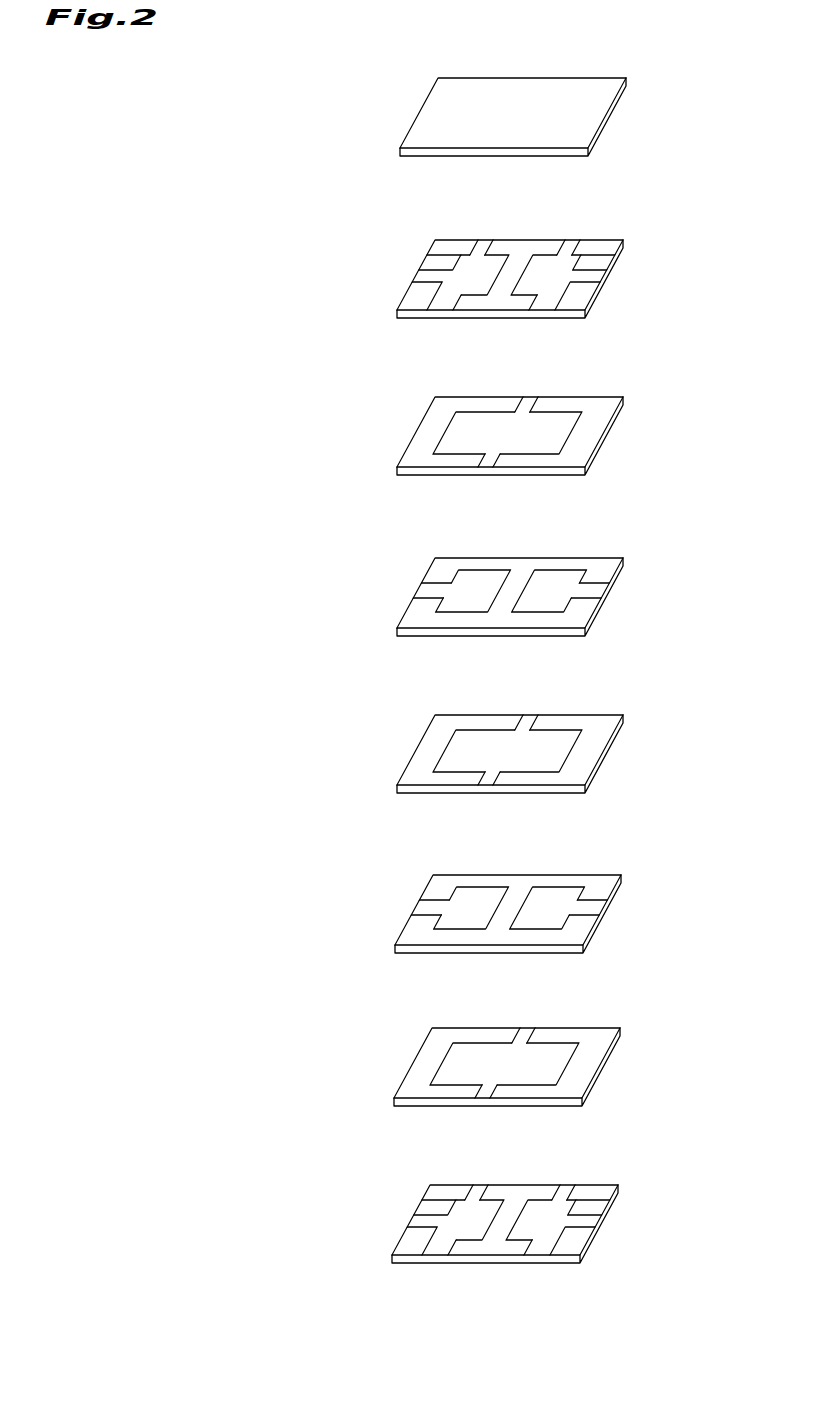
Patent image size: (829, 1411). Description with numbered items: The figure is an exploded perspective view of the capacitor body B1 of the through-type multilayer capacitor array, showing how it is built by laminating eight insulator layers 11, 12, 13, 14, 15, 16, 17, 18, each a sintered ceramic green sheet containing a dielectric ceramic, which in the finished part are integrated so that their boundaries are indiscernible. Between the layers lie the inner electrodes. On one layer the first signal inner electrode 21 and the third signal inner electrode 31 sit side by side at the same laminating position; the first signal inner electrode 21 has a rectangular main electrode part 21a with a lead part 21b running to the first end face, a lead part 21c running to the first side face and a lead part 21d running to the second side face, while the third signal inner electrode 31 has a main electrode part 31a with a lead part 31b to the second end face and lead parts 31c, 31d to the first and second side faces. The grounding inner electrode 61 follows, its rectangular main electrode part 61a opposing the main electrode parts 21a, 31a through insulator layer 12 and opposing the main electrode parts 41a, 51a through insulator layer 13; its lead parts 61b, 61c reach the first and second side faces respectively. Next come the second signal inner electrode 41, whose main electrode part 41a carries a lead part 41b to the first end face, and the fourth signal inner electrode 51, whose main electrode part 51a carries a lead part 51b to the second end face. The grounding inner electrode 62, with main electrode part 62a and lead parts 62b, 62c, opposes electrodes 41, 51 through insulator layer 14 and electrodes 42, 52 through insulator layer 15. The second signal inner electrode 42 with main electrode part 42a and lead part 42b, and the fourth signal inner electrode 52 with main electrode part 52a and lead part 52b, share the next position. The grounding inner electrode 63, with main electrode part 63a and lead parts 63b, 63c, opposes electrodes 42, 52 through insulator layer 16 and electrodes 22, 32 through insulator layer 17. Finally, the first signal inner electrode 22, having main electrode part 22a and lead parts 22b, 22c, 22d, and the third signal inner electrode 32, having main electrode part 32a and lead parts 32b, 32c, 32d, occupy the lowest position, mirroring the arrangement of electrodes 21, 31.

The capacitor body B1 is at (273, 1320).
The insulator layer 11 is at (614, 78).
The insulator layer 12 is at (547, 240).
The insulator layer 13 is at (612, 397).
The insulator layer 14 is at (612, 558).
The insulator layer 15 is at (612, 715).
The insulator layer 16 is at (610, 875).
The insulator layer 17 is at (610, 1028).
The insulator layer 18 is at (540, 1185).
The first signal inner electrode 21 is at (350, 200).
The main electrode part 21a is at (465, 268).
The lead part 21b is at (436, 270).
The lead part 21c is at (444, 297).
The lead part 21d is at (480, 244).
The third signal inner electrode 31 is at (688, 200).
The main electrode part 31a is at (555, 265).
The lead part 31b is at (594, 268).
The lead part 31c is at (550, 300).
The lead part 31d is at (570, 244).
The grounding inner electrode 61 is at (350, 380).
The main electrode part 61a is at (462, 432).
The lead part 61b is at (490, 457).
The lead part 61c is at (527, 402).
The second signal inner electrode 41 is at (350, 546).
The main electrode part 41a is at (468, 578).
The lead part 41b is at (432, 590).
The fourth signal inner electrode 51 is at (688, 546).
The main electrode part 51a is at (560, 578).
The lead part 51b is at (587, 587).
The grounding inner electrode 62 is at (350, 698).
The main electrode part 62a is at (462, 750).
The lead part 62b is at (490, 775).
The lead part 62c is at (527, 720).
The second signal inner electrode 42 is at (350, 863).
The main electrode part 42a is at (466, 895).
The lead part 42b is at (430, 907).
The fourth signal inner electrode 52 is at (688, 863).
The main electrode part 52a is at (558, 895).
The lead part 52b is at (585, 904).
The grounding inner electrode 63 is at (350, 1011).
The main electrode part 63a is at (459, 1063).
The lead part 63b is at (487, 1088).
The lead part 63c is at (524, 1033).
The first signal inner electrode 22 is at (350, 1145).
The main electrode part 22a is at (460, 1213).
The lead part 22b is at (431, 1215).
The lead part 22c is at (439, 1242).
The lead part 22d is at (475, 1189).
The third signal inner electrode 32 is at (688, 1145).
The main electrode part 32a is at (550, 1210).
The lead part 32b is at (589, 1213).
The lead part 32c is at (545, 1245).
The lead part 32d is at (565, 1189).